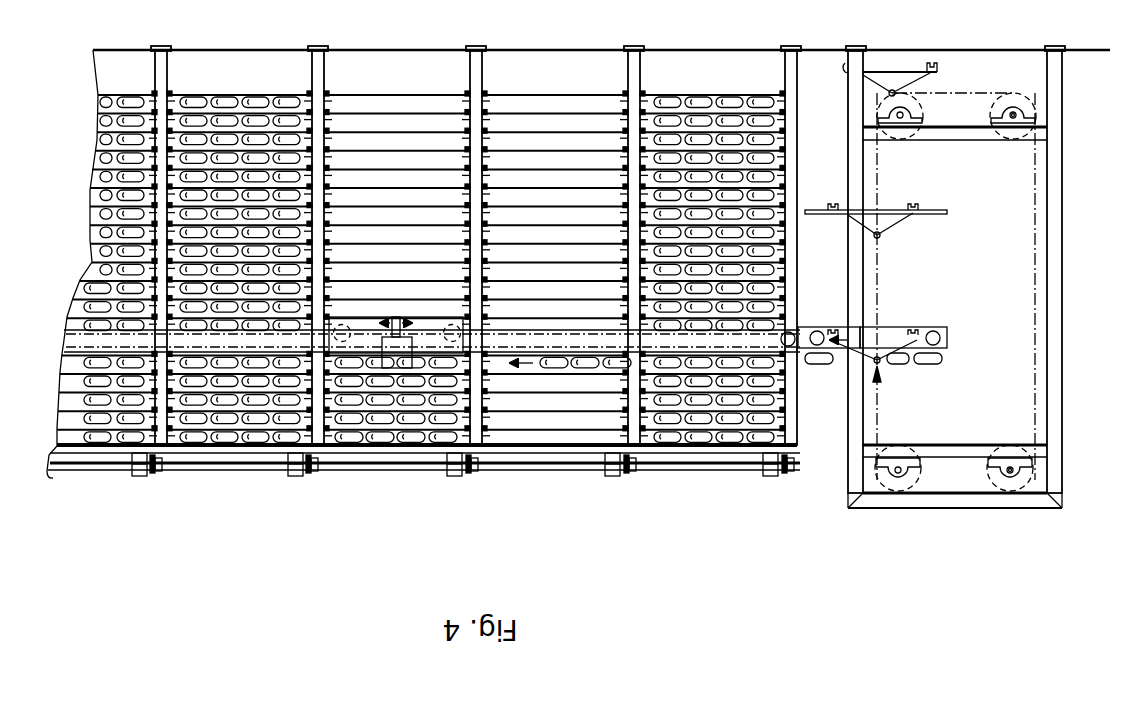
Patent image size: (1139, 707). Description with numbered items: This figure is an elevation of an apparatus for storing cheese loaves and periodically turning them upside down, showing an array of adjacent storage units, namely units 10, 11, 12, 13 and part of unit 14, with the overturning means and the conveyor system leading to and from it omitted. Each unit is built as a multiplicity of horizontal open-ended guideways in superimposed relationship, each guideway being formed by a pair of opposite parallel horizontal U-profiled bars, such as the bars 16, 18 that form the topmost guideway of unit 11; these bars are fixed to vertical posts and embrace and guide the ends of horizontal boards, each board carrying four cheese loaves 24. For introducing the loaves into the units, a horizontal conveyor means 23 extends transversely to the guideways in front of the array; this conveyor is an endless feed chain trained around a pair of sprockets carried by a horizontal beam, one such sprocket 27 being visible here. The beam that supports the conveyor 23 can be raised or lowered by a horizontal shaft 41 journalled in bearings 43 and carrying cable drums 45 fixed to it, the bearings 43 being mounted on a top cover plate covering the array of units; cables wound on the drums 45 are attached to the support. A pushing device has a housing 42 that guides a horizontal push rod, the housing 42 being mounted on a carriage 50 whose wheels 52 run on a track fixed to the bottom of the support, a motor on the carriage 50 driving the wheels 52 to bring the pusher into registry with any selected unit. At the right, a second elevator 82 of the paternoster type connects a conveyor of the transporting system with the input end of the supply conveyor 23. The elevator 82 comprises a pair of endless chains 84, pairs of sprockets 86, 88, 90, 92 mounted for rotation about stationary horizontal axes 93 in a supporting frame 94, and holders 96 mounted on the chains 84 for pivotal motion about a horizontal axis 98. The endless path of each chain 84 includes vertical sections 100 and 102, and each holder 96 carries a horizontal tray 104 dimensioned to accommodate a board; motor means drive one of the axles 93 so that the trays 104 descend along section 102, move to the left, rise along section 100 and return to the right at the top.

The unit 10 is at (712, 334).
The unit 11 is at (558, 522).
The unit 12 is at (385, 523).
The unit 13 is at (233, 520).
The unit 14 is at (92, 520).
The U-profiled bar 16 is at (628, 430).
The U-profiled bar 18 is at (484, 430).
The horizontal conveyor means 23 is at (518, 364).
The cheese loaves 24 is at (757, 440).
The sprocket 27 is at (795, 350).
The horizontal shaft 41 is at (525, 467).
The housing 42 is at (397, 370).
The bearings 43 is at (140, 478).
The cable drums 45 is at (157, 477).
The carriage 50 is at (396, 421).
The wheels 52 is at (348, 328).
The second elevator 82 is at (1068, 193).
The endless chains 84 is at (1036, 398).
The sprocket 86 is at (1003, 447).
The sprocket 88 is at (897, 446).
The sprocket 90 is at (921, 132).
The sprocket 92 is at (1010, 95).
The horizontal axes 93 is at (1014, 114).
The supporting frame 94 is at (967, 134).
The holder 96 is at (935, 216).
The horizontal axis 98 is at (880, 238).
The vertical section 100 is at (1036, 213).
The vertical section 102 is at (877, 287).
The horizontal tray 104 is at (930, 326).